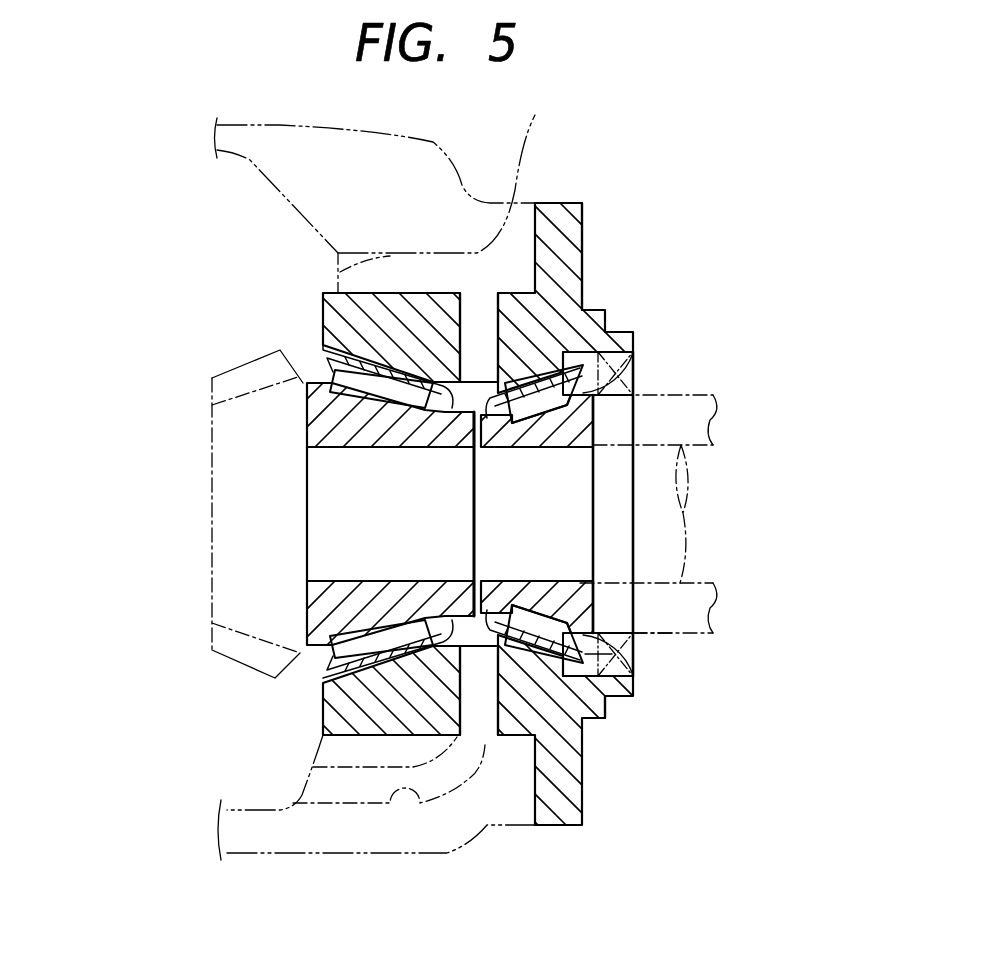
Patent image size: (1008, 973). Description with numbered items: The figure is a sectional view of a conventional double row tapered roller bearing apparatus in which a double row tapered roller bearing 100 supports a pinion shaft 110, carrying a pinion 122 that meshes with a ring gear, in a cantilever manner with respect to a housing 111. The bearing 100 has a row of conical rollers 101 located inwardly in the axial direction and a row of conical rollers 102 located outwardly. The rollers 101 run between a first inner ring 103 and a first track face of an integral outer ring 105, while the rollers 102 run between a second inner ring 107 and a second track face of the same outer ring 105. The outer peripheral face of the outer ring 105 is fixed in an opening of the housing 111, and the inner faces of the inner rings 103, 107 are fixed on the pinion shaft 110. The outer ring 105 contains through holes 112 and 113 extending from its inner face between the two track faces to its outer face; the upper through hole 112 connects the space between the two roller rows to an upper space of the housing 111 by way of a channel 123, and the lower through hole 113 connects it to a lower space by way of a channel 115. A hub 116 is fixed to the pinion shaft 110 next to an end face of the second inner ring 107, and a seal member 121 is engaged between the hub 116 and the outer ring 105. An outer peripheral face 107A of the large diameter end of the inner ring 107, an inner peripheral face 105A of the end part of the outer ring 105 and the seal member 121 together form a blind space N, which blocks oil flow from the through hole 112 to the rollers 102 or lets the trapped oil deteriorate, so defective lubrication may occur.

The double row tapered roller bearing 100 is at (590, 232).
The conical rollers 101 is at (316, 366).
The conical rollers 102 is at (600, 364).
The first inner ring 103 is at (310, 418).
The integral outer ring 105 is at (572, 273).
The inner peripheral face 105A is at (609, 699).
The second inner ring 107 is at (636, 406).
The outer peripheral face 107A is at (636, 630).
The pinion shaft 110 is at (664, 485).
The housing 111 is at (462, 183).
The through hole 112 is at (460, 327).
The through hole 113 is at (465, 700).
The channel 115 is at (387, 803).
The hub 116 is at (673, 635).
The seal member 121 is at (626, 661).
The pinion 122 is at (228, 368).
The channel 123 is at (340, 270).
The blind space N is at (633, 664).